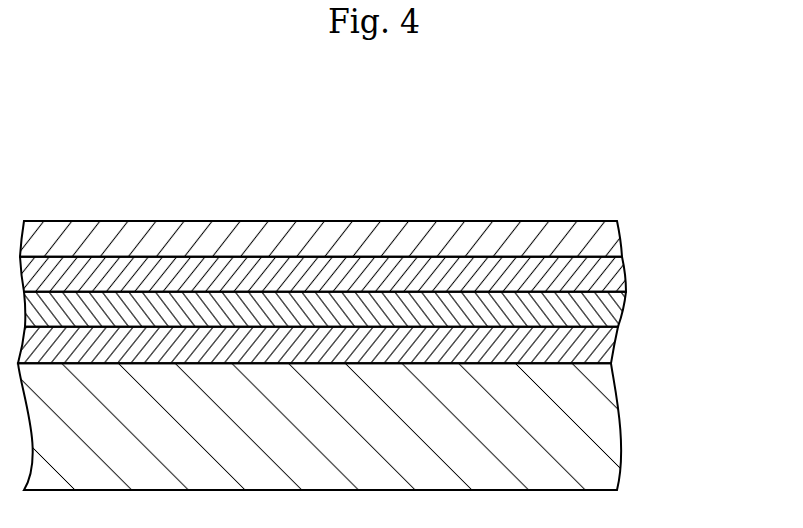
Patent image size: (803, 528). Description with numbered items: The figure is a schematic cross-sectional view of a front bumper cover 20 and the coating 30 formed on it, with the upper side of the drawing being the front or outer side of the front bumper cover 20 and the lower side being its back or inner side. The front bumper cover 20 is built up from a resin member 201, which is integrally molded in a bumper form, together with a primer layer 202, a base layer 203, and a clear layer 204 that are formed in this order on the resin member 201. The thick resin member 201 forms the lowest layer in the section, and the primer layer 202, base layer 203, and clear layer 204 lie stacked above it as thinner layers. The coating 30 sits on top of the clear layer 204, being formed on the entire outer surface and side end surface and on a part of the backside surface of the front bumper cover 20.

The coating 30 is at (260, 238).
The front bumper cover 20 is at (400, 371).
The resin member 201 is at (370, 426).
The primer layer 202 is at (597, 346).
The base layer 203 is at (593, 315).
The clear layer 204 is at (598, 271).